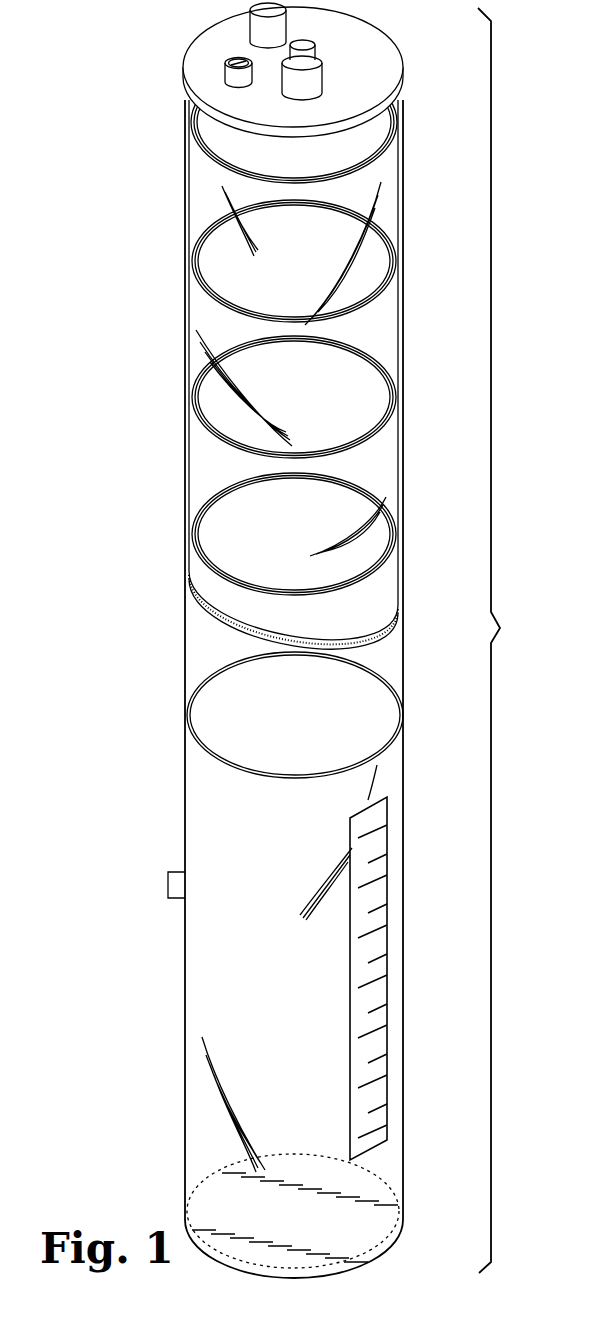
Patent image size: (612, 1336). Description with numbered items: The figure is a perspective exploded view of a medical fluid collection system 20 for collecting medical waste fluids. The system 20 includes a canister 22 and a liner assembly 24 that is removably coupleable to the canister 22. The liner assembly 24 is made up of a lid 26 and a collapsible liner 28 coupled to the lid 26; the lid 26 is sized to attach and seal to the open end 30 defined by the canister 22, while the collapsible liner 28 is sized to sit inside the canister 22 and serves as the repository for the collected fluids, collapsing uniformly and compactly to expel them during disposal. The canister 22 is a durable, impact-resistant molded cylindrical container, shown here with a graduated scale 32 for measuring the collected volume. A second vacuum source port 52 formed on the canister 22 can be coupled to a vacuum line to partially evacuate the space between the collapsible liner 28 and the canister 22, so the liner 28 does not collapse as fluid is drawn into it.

The medical fluid collection system 20 is at (504, 640).
The canister 22 is at (185, 1012).
The liner assembly 24 is at (172, 342).
The lid 26 is at (201, 46).
The collapsible liner 28 is at (205, 201).
The open end 30 is at (185, 712).
The graduated scale 32 is at (387, 835).
The second vacuum source port 52 is at (176, 880).